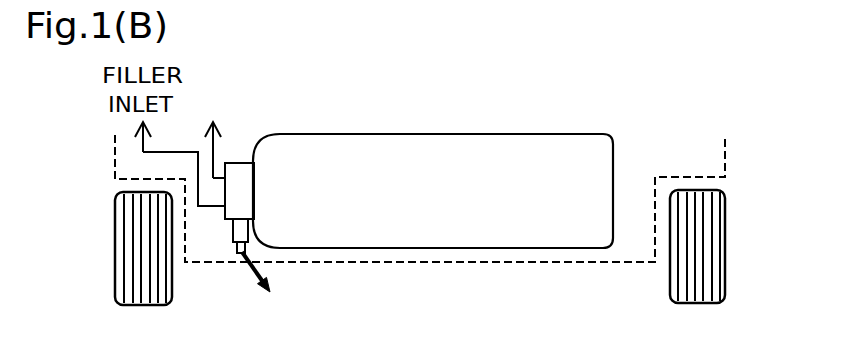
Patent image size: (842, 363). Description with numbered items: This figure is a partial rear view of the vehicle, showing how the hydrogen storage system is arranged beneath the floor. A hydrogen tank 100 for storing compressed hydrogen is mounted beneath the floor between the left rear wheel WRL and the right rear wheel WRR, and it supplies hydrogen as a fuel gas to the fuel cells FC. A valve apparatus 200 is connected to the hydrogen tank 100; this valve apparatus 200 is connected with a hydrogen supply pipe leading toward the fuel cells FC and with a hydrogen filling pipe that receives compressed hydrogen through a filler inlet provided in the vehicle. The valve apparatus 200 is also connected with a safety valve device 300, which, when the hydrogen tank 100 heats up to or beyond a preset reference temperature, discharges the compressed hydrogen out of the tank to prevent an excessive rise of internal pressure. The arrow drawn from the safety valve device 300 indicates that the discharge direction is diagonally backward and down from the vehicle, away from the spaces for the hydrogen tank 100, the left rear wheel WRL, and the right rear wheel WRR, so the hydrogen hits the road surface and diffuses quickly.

The hydrogen tank 100 is at (453, 203).
The valve apparatus 200 is at (243, 158).
The safety valve device 300 is at (233, 232).
The left rear wheel WRL is at (115, 218).
The right rear wheel WRR is at (753, 219).
The fuel cells FC is at (212, 138).